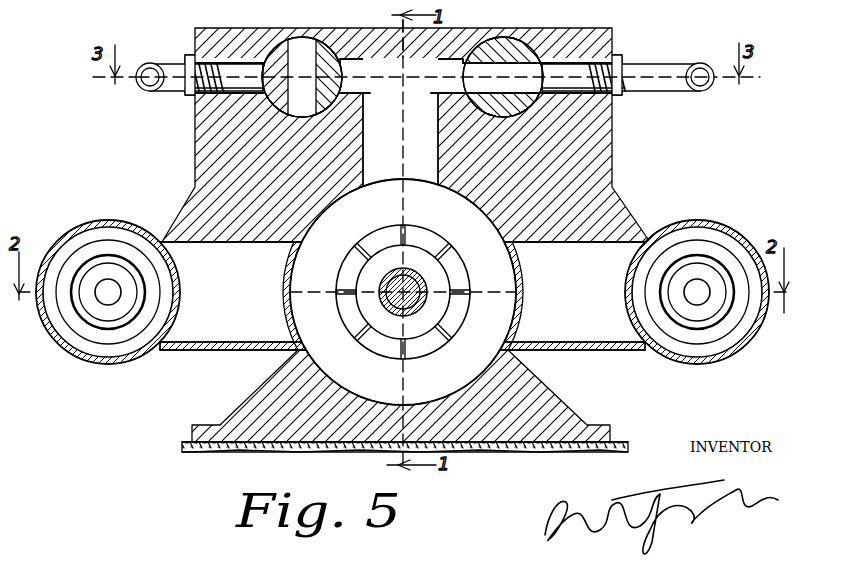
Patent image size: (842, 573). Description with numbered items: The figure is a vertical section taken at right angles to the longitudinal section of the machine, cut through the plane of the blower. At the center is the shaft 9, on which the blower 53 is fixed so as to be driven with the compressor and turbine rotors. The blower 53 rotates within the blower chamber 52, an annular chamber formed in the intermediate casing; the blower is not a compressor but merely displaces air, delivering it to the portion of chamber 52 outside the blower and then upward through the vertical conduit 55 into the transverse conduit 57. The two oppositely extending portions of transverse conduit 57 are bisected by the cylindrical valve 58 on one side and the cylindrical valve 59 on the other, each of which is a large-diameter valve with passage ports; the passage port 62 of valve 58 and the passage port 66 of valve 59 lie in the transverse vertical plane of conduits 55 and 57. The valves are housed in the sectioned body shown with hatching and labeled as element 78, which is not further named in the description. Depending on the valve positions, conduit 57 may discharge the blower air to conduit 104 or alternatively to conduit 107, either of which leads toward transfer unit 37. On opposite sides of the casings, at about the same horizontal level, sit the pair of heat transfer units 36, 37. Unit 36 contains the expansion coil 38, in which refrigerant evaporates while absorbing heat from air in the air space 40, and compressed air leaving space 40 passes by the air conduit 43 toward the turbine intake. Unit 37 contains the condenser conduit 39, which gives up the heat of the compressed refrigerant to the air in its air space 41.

The shaft 9 is at (410, 300).
The heat transfer unit 36 is at (106, 222).
The heat transfer unit 37 is at (741, 236).
The expansion coil 38 is at (82, 255).
The condenser conduit 39 is at (676, 245).
The air space 40 is at (86, 343).
The air space 41 is at (703, 233).
The air conduit 43 is at (402, 296).
The blower chamber 52 is at (403, 292).
The blower 53 is at (440, 244).
The vertical conduit 55 is at (400, 124).
The transverse conduit 57 is at (225, 72).
The cylindrical valve 58 is at (280, 60).
The cylindrical valve 59 is at (510, 37).
The passage port 62 is at (302, 77).
The passage port 66 is at (505, 77).
The bearing block 78 is at (200, 121).
The conduit 104 is at (660, 65).
The conduit 107 is at (168, 64).